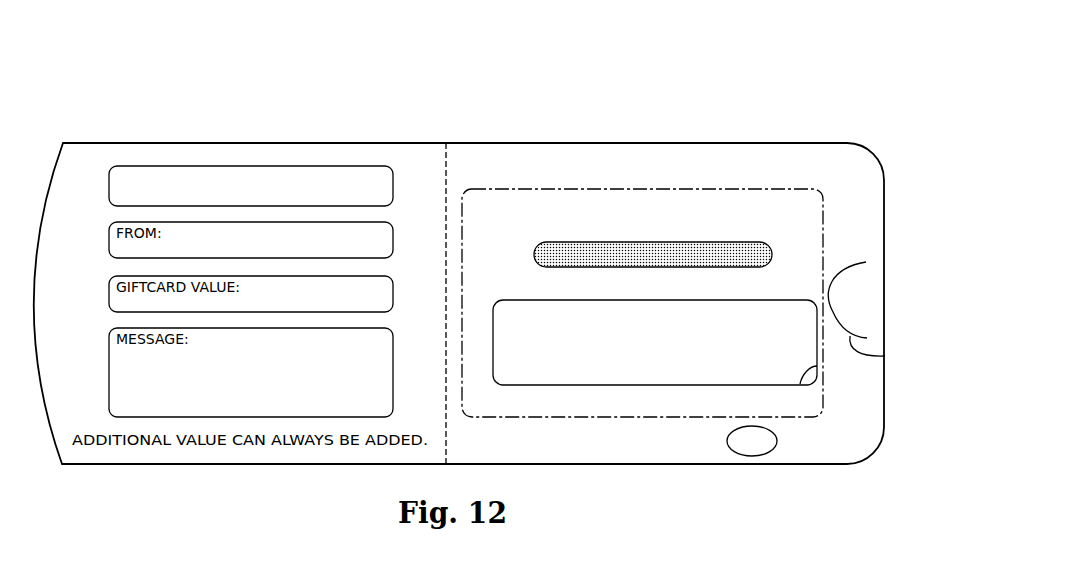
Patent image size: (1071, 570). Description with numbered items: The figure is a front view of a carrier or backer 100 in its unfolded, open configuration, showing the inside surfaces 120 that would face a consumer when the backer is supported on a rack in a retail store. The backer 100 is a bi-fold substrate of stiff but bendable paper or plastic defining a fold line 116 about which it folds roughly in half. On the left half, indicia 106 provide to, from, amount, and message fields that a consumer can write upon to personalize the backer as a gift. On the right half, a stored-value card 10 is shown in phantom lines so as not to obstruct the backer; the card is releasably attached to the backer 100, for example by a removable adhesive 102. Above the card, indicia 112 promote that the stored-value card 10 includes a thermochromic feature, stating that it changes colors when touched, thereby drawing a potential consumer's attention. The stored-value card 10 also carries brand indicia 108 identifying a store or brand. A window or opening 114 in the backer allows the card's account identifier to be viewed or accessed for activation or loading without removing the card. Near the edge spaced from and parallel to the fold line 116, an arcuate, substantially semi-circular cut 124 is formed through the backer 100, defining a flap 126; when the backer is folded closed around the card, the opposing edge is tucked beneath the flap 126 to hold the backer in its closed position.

The backer 100 is at (745, 113).
The indicia 106 is at (267, 166).
The fold line 116 is at (446, 157).
The indicia 112 is at (785, 168).
The stored-value card 10 is at (810, 214).
The removable adhesive 102 is at (773, 255).
The window or opening 114 is at (800, 385).
The brand indicia 108 is at (733, 452).
The flap 126 is at (838, 302).
The cut 124 is at (885, 356).
The inside surfaces 120 is at (565, 446).